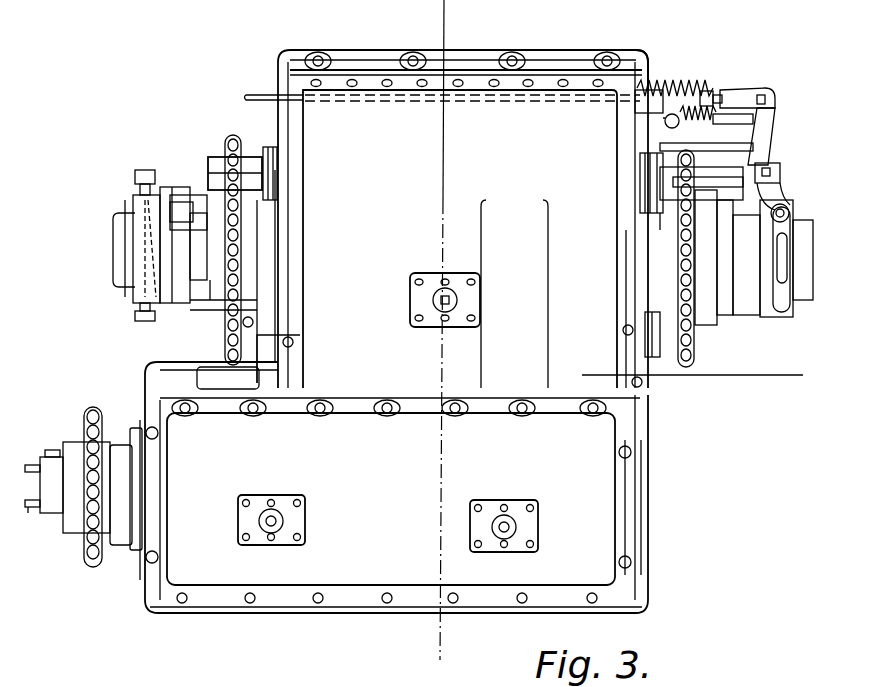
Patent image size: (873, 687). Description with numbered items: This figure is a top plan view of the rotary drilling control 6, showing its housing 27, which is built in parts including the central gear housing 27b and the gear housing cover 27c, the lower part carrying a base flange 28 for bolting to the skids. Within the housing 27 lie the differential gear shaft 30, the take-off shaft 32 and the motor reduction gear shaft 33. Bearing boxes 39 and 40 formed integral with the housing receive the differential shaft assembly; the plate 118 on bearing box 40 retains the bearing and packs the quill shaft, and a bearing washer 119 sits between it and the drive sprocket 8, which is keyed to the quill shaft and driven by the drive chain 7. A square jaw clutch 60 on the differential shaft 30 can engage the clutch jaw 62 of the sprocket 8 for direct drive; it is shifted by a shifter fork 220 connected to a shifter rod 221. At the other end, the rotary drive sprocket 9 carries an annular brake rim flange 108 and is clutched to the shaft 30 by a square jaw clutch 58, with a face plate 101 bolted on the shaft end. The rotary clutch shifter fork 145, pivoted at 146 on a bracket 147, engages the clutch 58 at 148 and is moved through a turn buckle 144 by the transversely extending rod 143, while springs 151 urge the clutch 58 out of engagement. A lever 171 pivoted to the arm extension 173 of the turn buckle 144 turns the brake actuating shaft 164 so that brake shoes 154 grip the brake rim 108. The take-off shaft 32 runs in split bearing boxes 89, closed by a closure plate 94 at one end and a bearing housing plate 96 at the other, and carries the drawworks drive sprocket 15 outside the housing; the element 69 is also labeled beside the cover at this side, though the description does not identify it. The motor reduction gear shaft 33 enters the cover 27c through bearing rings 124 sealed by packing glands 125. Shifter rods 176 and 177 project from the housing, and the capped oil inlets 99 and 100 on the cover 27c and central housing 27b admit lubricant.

The central gear housing 27b is at (380, 113).
The base flange 28 is at (478, 60).
The brake actuating shaft 164 is at (648, 56).
The drive chain 7 is at (443, 12).
The drive sprocket 8 is at (230, 135).
The arm extension 173 is at (722, 92).
The springs 151 is at (702, 88).
The turn buckle 144 is at (740, 89).
The motor reduction gear shaft 33 is at (213, 157).
The transversely extending rod 143 is at (256, 93).
The rotary clutch shifter fork 145 is at (765, 124).
The lever 171 is at (677, 119).
The pivot 146 is at (768, 170).
The bracket 147 is at (663, 146).
The shifter fork 220 is at (153, 190).
The square jaw clutch 60 is at (167, 195).
The packing glands 125 is at (267, 167).
The bearing rings 124 is at (278, 187).
The clutch engagement 148 is at (783, 205).
The shifter rod 221 is at (110, 250).
The differential gear shaft 30 is at (190, 247).
The brake shoes 154 is at (647, 220).
The cap oil inlet 100 is at (433, 278).
The annular brake rim flange 108 is at (648, 258).
The bearing washer 119 is at (263, 293).
The plate 118 is at (277, 302).
The bearing box 39 is at (622, 297).
The square jaw clutch 58 is at (745, 307).
The face plate 101 is at (807, 305).
The clutch jaw 62 is at (212, 305).
The bearing box 40 is at (293, 317).
The rotary drive sprocket 9 is at (583, 375).
The drawworks drive sprocket 15 is at (97, 408).
The shifter fork rod 176 is at (32, 467).
The split bearing boxes 89 is at (155, 478).
The flange 69 is at (630, 483).
The bearing housing plate 96 is at (120, 496).
The closure plate 94 is at (647, 495).
The capped oil inlet 99 is at (280, 515).
The gear housing cover 27c is at (598, 538).
The take-off shaft 32 is at (47, 515).
The shifter rod 177 is at (30, 512).
The housing 27 is at (620, 590).
The rotary drilling control 6 is at (138, 602).